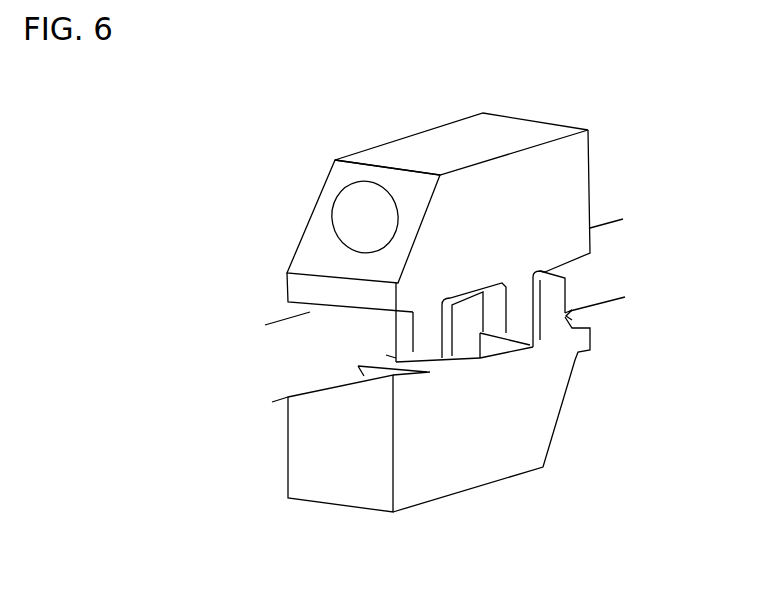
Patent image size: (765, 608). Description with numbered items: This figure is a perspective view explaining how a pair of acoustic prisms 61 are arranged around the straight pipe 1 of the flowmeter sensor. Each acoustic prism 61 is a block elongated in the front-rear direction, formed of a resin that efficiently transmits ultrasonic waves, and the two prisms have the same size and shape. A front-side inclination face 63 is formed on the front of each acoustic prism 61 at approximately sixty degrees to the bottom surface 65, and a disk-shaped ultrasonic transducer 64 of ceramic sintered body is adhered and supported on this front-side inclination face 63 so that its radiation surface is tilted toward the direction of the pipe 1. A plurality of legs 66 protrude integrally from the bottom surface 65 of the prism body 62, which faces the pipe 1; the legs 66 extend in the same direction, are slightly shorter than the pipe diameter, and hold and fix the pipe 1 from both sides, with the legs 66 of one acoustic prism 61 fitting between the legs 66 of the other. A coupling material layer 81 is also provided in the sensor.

The pipe 1 is at (617, 268).
The acoustic prism 61 is at (412, 136).
The prism body 62 is at (543, 123).
The front-side inclination face 63 is at (342, 178).
The ultrasonic transducer 64 is at (375, 216).
The bottom surface 65 is at (387, 375).
The leg 66 is at (467, 322).
The coupling material layer 81 is at (387, 357).